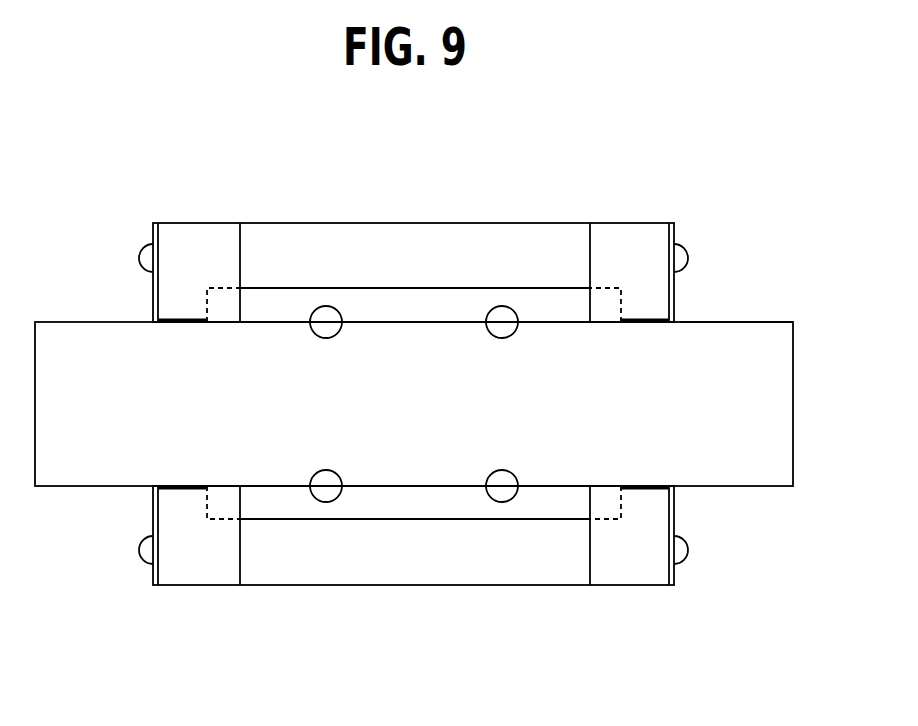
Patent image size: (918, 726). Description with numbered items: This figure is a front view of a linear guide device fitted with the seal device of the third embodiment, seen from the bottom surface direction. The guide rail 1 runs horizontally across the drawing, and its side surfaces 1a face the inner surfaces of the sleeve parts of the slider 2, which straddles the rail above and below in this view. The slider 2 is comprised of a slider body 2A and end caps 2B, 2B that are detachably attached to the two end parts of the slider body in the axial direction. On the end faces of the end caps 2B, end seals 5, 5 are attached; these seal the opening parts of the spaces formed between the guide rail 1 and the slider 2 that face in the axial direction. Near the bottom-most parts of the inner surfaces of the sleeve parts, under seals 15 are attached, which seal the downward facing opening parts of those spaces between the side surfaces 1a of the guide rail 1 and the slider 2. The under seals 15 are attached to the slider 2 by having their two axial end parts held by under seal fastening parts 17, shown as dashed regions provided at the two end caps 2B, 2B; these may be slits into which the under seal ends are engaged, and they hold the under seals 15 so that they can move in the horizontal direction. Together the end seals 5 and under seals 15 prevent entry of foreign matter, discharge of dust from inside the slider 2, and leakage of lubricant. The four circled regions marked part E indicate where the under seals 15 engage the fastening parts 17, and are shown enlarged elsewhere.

The guide rail 1 is at (787, 356).
The side surface 1a is at (770, 320).
The slider 2 is at (550, 219).
The slider body 2A is at (407, 224).
The end cap 2B is at (200, 233).
The end seal 5 is at (152, 578).
The under seal 15 is at (274, 305).
The under seal fastening part 17 is at (223, 305).
The part E is at (326, 306).